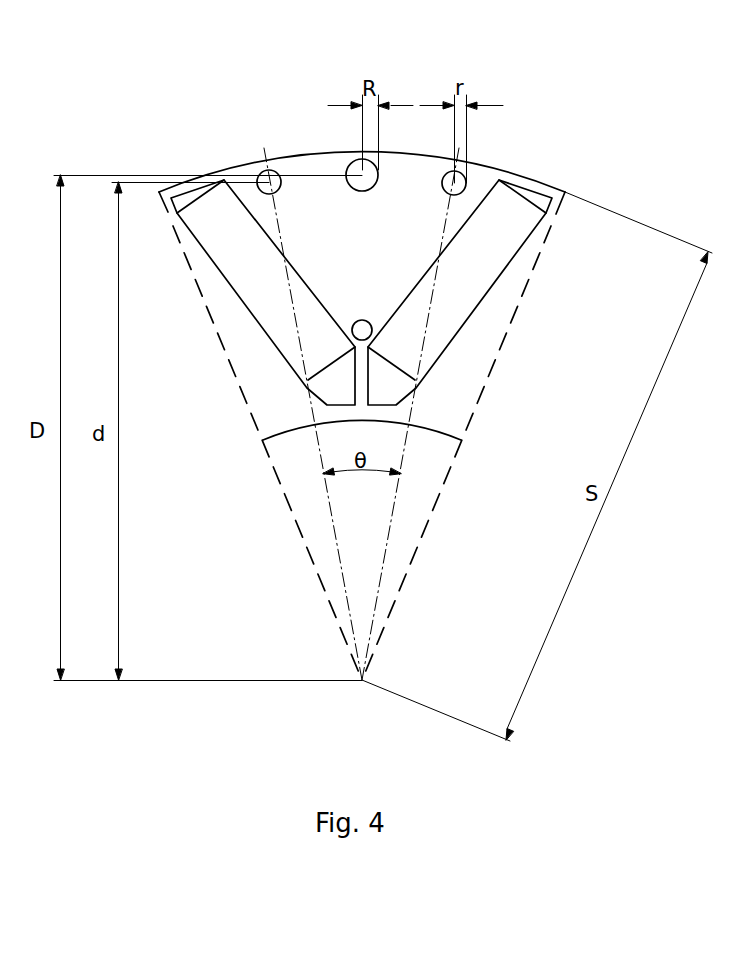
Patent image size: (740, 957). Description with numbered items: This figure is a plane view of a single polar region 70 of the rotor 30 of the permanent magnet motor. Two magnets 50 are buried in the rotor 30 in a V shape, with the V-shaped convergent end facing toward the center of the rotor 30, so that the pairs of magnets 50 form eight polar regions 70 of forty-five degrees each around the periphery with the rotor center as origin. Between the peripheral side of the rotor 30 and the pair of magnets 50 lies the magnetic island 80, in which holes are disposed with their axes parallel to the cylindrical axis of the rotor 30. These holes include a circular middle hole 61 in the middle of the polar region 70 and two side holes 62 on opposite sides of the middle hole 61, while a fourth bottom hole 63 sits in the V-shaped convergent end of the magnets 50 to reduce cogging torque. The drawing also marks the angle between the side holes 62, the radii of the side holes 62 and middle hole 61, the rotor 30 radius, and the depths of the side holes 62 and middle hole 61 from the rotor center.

The rotor 30 is at (527, 185).
The magnets 50 is at (258, 280).
The middle hole 61 is at (347, 167).
The side holes 62 is at (268, 171).
The bottom hole 63 is at (363, 331).
The polar region 70 is at (418, 540).
The magnetic island 80 is at (398, 210).